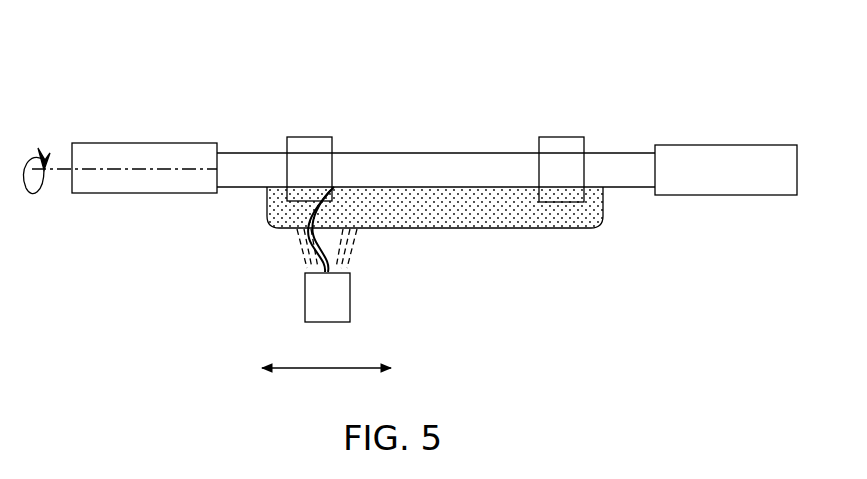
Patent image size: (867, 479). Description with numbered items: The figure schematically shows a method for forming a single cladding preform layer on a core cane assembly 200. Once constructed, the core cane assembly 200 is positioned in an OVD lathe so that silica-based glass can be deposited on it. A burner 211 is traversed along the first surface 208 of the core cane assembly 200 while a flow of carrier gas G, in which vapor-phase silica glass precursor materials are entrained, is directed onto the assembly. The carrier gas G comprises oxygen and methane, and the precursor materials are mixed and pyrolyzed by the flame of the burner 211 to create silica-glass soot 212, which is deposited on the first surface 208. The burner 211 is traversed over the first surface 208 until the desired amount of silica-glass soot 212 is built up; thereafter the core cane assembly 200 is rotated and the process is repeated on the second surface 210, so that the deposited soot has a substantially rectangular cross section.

The core cane assembly 200 is at (410, 141).
The first surface 208 is at (238, 192).
The second surface 210 is at (624, 148).
The burner 211 is at (304, 316).
The silica-glass soot 212 is at (545, 228).
The carrier gas G is at (298, 268).